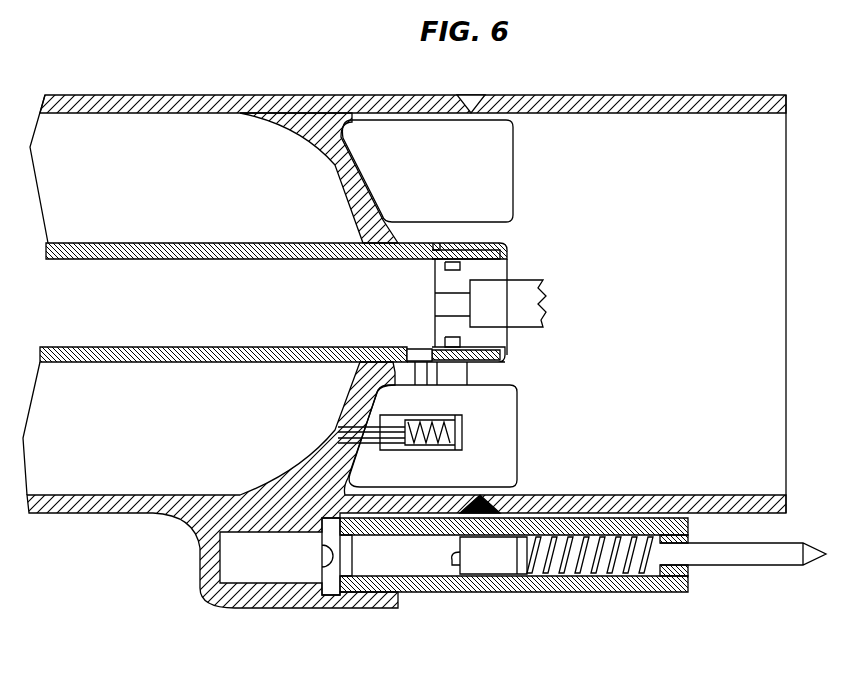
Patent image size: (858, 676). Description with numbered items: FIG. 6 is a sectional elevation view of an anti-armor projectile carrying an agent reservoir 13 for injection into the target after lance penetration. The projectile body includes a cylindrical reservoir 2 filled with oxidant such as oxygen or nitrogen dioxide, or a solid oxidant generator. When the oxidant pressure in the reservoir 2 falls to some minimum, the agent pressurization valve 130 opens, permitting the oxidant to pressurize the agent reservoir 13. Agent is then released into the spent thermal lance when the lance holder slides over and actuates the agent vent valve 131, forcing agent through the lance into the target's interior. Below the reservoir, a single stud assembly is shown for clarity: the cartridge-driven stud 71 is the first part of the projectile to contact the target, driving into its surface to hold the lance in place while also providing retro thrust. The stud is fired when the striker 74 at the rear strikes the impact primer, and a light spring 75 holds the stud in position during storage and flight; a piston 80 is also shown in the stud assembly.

The cylindrical reservoir 2 is at (200, 191).
The agent reservoir 13 is at (492, 186).
The agent vent valve 131 is at (422, 372).
The agent pressurization valve 130 is at (376, 446).
The striker 74 is at (455, 566).
The piston 80 is at (490, 568).
The light springs 75 is at (560, 578).
The cartridge-driven studs 71 is at (737, 566).